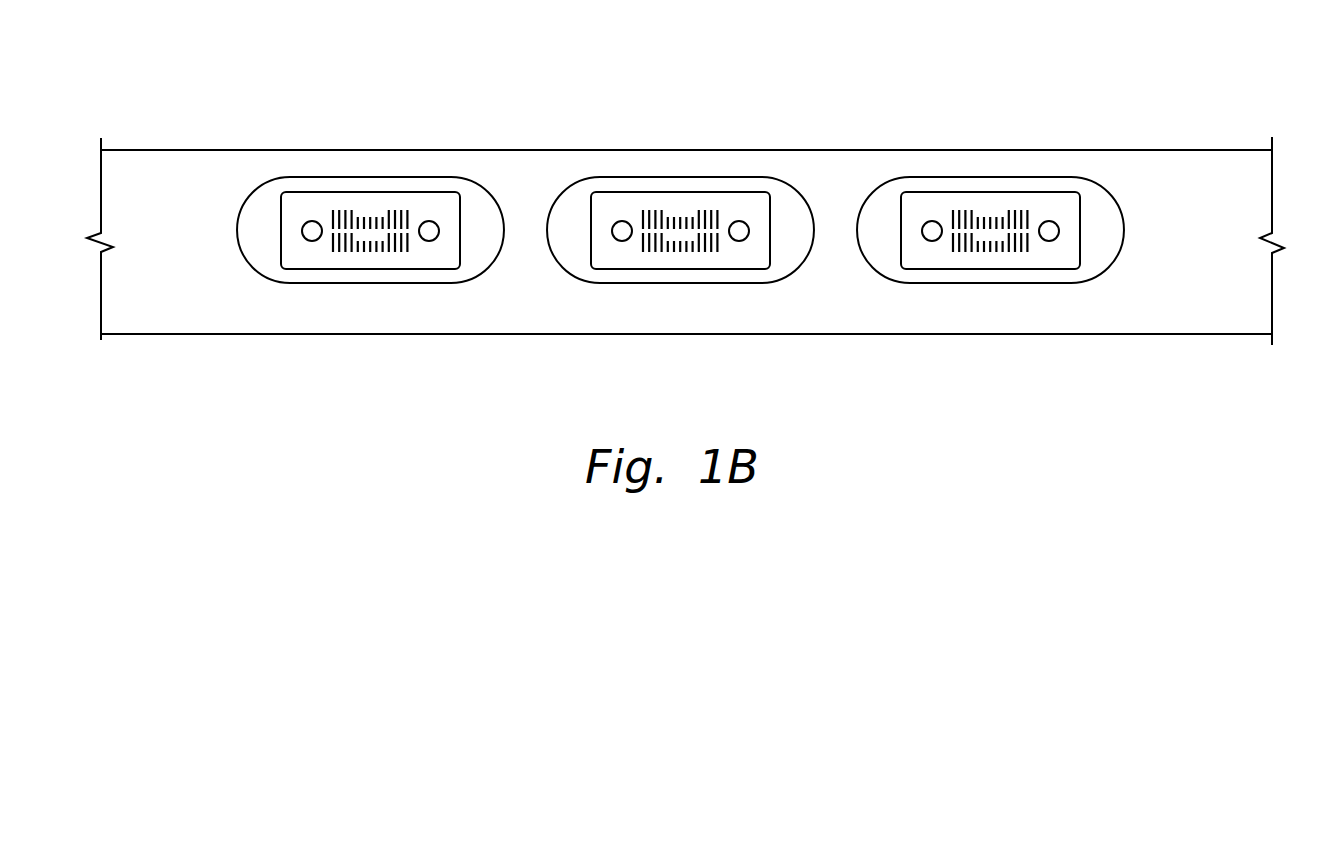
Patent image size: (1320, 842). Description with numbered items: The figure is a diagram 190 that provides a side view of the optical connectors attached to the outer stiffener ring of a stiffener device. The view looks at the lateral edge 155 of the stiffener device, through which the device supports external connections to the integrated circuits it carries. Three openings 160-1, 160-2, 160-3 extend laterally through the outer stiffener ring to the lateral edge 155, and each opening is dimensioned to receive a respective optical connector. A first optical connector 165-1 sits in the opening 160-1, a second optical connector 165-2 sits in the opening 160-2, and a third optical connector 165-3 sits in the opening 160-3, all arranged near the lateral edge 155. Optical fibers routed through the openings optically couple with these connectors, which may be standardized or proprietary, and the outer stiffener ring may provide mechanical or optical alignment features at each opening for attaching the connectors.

The diagram 190 is at (1180, 46).
The lateral edge 155 is at (197, 158).
The opening 160-1 is at (478, 205).
The opening 160-2 is at (788, 205).
The opening 160-3 is at (1098, 205).
The optical connector 165-1 is at (372, 207).
The optical connector 165-2 is at (682, 207).
The optical connector 165-3 is at (992, 207).